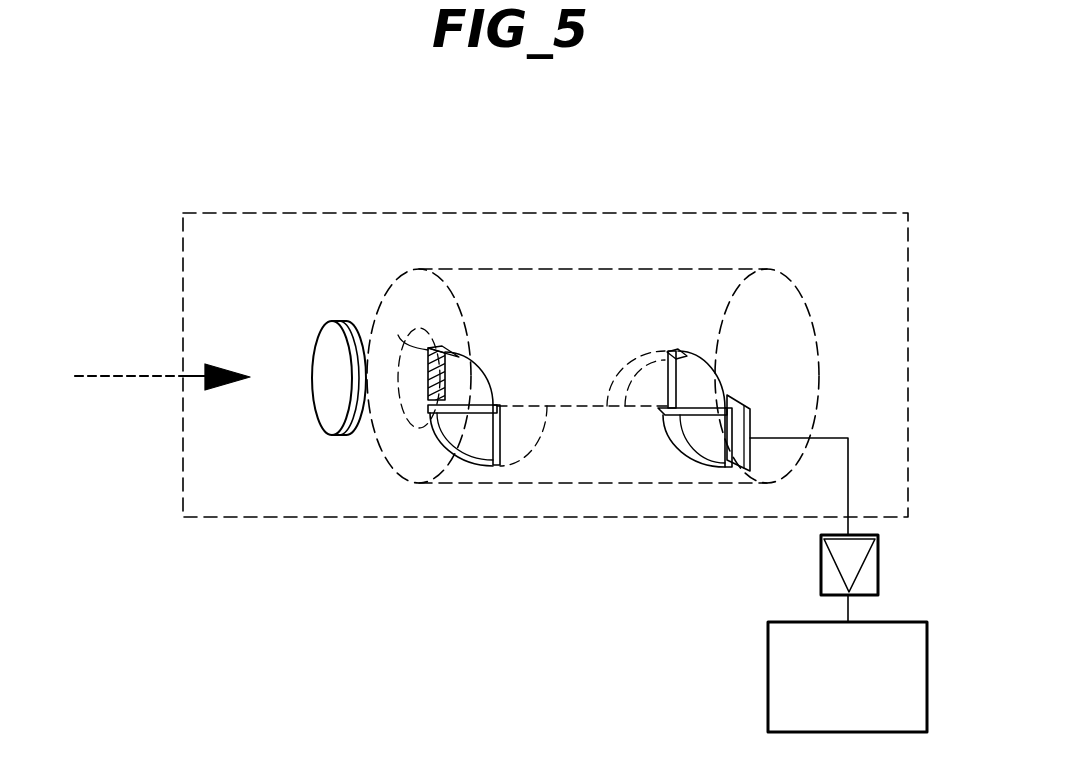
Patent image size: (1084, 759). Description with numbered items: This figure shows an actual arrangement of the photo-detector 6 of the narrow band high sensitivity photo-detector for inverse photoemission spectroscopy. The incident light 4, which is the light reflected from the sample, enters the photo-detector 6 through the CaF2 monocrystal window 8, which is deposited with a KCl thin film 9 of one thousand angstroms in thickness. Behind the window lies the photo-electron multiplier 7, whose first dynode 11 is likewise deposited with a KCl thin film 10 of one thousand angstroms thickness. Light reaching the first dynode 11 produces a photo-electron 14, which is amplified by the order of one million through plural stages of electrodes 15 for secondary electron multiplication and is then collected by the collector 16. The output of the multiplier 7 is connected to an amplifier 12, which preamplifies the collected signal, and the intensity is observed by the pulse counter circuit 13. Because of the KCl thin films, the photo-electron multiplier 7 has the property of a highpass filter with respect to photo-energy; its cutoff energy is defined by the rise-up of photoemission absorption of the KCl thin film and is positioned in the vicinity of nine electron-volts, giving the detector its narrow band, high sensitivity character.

The incident light 4 is at (138, 376).
The photo-detector 6 is at (707, 213).
The photo-electron multiplier 7 is at (652, 268).
The CaF2 monocrystal window 8 is at (354, 322).
The KCl thin film 9 is at (330, 321).
The KCl thin film 10 is at (398, 335).
The first dynode 11 is at (470, 365).
The amplifier 12 is at (821, 560).
The pulse counter circuit 13 is at (768, 678).
The photo-electron 14 is at (575, 405).
The electrode 15 is at (636, 352).
The collector 16 is at (746, 400).